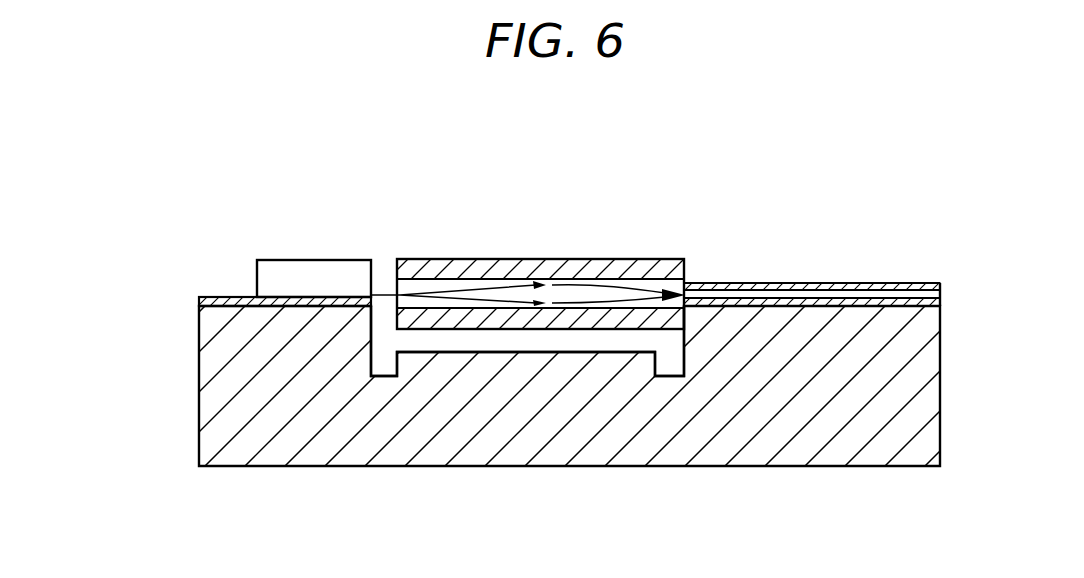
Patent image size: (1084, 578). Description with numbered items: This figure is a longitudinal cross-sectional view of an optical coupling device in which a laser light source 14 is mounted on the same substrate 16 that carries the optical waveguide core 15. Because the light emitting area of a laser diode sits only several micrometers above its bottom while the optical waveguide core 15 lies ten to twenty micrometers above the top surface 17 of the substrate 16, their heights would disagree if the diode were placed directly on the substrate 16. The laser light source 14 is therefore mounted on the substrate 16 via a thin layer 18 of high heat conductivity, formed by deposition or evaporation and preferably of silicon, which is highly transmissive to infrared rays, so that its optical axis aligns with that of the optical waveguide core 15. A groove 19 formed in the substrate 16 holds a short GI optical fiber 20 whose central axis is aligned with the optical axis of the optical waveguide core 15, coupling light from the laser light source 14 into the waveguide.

The laser light source 14 is at (338, 263).
The optical waveguide core 15 is at (792, 290).
The substrate 16 is at (658, 442).
The top surface 17 is at (237, 297).
The thin layer 18 is at (210, 297).
The groove 19 is at (510, 342).
The short GI optical fiber 20 is at (518, 138).